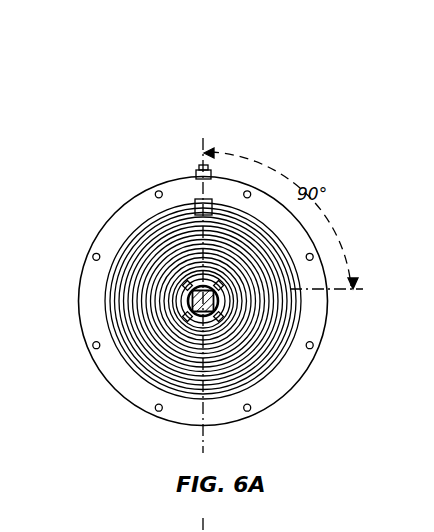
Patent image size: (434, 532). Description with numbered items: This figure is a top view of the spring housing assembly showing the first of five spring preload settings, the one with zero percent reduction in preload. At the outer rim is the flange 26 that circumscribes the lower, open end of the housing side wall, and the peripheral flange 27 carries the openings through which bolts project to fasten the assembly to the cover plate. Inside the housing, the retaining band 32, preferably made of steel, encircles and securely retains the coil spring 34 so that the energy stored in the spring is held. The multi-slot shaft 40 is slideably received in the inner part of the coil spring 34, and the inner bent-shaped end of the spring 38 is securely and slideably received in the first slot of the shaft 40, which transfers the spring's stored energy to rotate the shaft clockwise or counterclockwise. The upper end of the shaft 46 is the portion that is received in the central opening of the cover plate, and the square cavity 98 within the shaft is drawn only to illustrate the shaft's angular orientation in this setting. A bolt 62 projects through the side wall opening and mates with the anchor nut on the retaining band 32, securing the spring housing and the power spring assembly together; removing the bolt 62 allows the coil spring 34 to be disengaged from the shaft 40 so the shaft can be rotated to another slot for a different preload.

The flange 26 is at (276, 388).
The peripheral flange 27 is at (91, 347).
The retaining band 32 is at (122, 282).
The coil spring 34 is at (188, 299).
The inner bent-shaped end of the spring 38 is at (230, 298).
The multi-slot shaft 40 is at (190, 274).
The upper end of the shaft 46 is at (222, 311).
The bolt 62 is at (202, 166).
The square cavity 98 is at (190, 318).